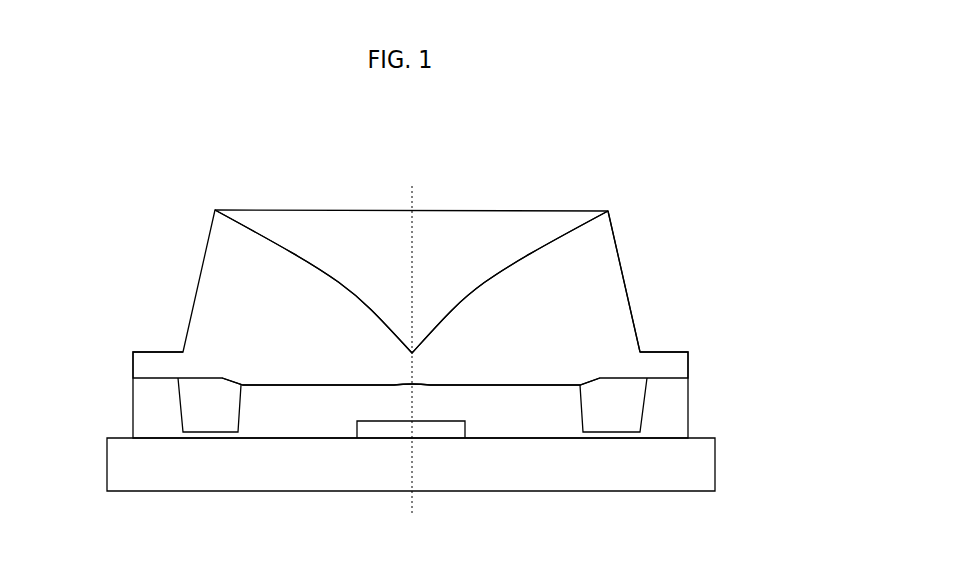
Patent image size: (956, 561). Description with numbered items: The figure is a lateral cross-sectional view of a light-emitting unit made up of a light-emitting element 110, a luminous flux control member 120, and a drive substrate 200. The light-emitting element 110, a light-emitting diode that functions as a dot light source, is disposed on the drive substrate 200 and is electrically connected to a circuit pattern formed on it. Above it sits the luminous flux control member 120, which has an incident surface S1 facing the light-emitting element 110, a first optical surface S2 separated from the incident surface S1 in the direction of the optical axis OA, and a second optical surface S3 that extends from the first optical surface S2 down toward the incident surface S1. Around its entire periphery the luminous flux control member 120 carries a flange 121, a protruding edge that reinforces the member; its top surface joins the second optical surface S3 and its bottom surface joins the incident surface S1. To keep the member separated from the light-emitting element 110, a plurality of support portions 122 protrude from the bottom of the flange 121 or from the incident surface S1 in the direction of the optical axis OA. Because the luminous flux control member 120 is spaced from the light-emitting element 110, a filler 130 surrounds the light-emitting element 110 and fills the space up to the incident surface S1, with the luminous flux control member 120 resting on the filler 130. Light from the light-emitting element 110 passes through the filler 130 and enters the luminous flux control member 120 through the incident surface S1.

The light-emitting element 110 is at (440, 442).
The luminous flux control member 120 is at (597, 183).
The flange 121 is at (664, 348).
The support portions 122 is at (605, 436).
The filler 130 is at (689, 396).
The drive substrate 200 is at (716, 460).
The optical axis OA is at (414, 339).
The incident surface S1 is at (505, 388).
The first optical surface S2 is at (498, 217).
The second optical surface S3 is at (615, 240).